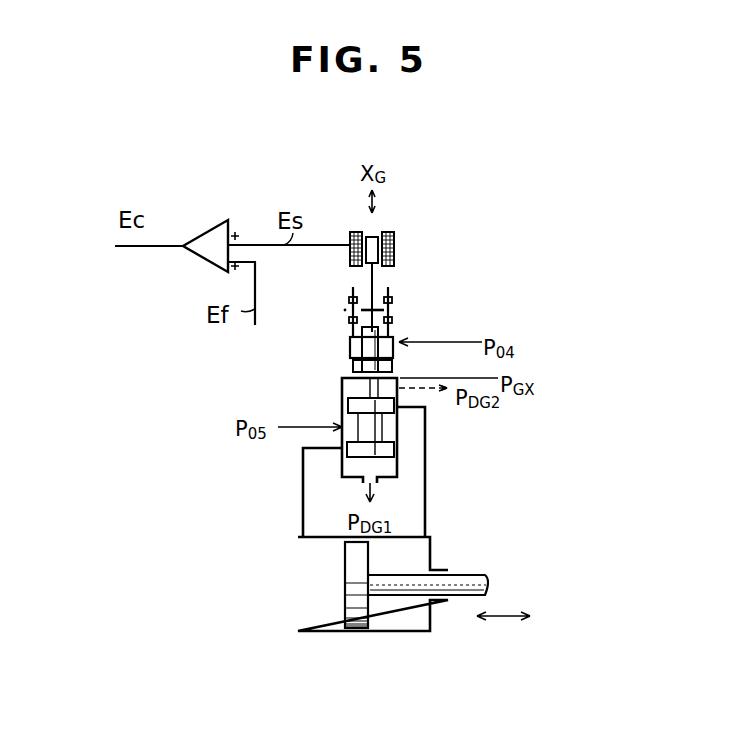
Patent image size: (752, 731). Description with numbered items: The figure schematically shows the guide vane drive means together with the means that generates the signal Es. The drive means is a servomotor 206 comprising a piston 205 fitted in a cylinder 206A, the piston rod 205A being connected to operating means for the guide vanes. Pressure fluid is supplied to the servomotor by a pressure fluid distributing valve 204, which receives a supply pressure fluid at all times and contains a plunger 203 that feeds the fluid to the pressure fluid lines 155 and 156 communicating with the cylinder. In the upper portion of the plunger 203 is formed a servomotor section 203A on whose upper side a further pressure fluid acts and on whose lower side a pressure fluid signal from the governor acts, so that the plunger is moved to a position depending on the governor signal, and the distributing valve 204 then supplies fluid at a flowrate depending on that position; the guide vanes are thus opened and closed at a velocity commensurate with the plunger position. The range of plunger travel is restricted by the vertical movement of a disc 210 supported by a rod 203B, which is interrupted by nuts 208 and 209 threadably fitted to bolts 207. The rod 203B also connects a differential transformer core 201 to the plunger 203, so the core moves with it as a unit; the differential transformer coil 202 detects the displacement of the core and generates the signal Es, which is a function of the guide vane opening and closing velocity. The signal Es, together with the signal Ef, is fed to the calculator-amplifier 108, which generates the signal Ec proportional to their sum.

The calculator-amplifier 108 is at (221, 232).
The differential transformer core 201 is at (373, 236).
The differential transformer coil 202 is at (393, 237).
The plunger 203 is at (350, 406).
The servomotor section 203A is at (362, 348).
The rod 203B is at (388, 287).
The pressure fluid distributing valve 204 is at (342, 383).
The piston 205 is at (357, 632).
The piston rod 205A is at (461, 548).
The servomotor 206 is at (297, 573).
The cylinder 206A is at (298, 604).
The bolts 207 is at (350, 288).
The nut 208 is at (349, 299).
The nut 209 is at (349, 319).
The disc 210 is at (386, 310).
The pressure fluid line 155 is at (303, 478).
The pressure fluid line 156 is at (427, 461).